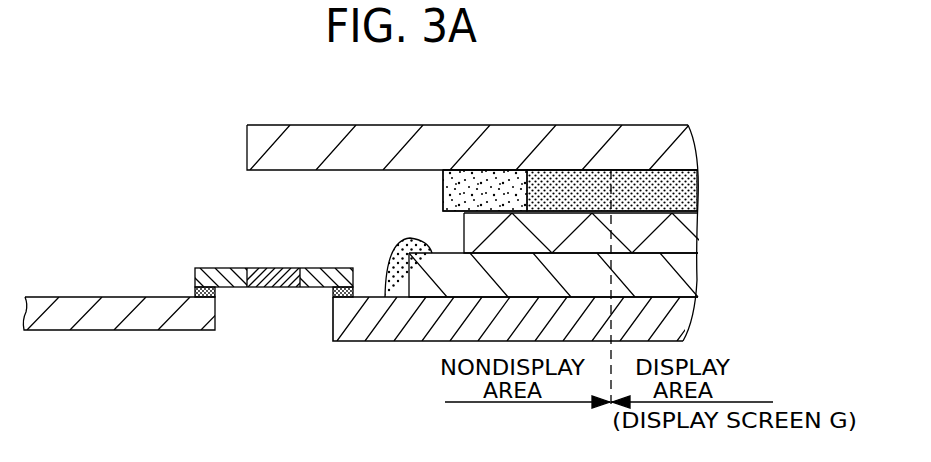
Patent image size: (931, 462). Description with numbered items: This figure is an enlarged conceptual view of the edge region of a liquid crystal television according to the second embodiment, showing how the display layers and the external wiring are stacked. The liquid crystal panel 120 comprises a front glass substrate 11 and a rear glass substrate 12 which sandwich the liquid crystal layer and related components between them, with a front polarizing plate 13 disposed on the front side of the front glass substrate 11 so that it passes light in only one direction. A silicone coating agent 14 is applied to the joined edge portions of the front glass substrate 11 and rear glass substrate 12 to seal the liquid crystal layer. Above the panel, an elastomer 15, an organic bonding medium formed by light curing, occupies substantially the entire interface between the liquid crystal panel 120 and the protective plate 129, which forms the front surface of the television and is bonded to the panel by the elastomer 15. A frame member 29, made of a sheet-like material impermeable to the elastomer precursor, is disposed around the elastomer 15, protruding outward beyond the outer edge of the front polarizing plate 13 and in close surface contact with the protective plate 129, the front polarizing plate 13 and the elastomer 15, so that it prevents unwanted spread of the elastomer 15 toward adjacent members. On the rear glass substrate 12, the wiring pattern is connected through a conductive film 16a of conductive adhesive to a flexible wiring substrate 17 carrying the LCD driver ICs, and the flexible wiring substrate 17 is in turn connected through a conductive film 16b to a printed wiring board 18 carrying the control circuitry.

The protective plate 129 is at (675, 150).
The elastomer 15 is at (672, 190).
The frame member 29 is at (491, 182).
The liquid crystal panel 120 is at (578, 277).
The front polarizing plate 13 is at (675, 236).
The front glass substrate 11 is at (672, 272).
The rear glass substrate 12 is at (547, 315).
The silicone coating agent 14 is at (397, 238).
The flexible wiring substrate 17 is at (263, 268).
The conductive film 16a is at (330, 292).
The conductive film 16b is at (195, 290).
The printed wiring board 18 is at (147, 330).